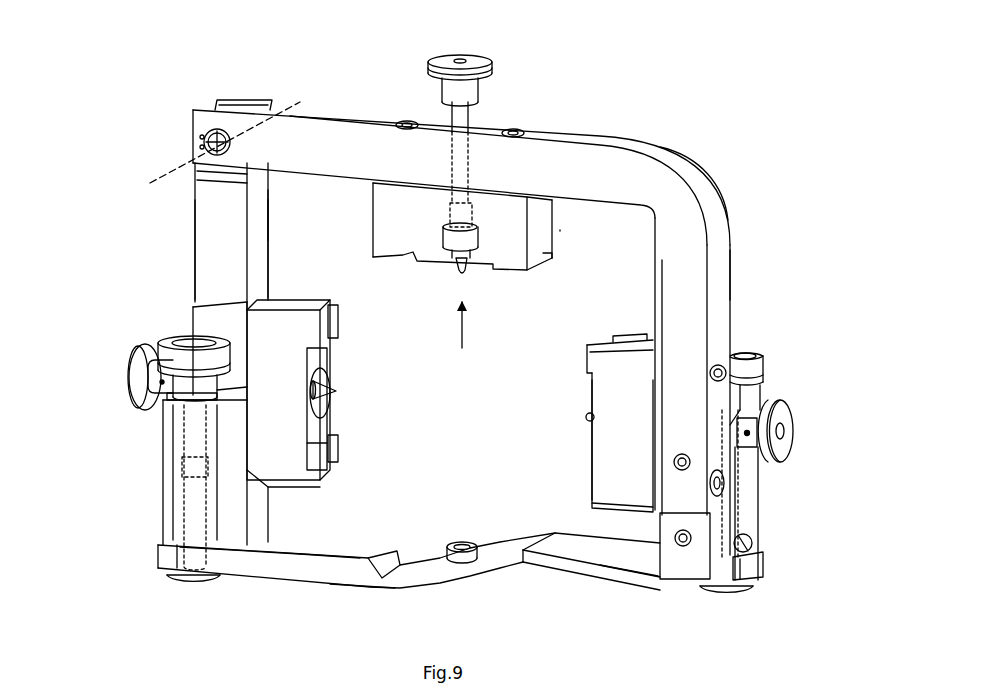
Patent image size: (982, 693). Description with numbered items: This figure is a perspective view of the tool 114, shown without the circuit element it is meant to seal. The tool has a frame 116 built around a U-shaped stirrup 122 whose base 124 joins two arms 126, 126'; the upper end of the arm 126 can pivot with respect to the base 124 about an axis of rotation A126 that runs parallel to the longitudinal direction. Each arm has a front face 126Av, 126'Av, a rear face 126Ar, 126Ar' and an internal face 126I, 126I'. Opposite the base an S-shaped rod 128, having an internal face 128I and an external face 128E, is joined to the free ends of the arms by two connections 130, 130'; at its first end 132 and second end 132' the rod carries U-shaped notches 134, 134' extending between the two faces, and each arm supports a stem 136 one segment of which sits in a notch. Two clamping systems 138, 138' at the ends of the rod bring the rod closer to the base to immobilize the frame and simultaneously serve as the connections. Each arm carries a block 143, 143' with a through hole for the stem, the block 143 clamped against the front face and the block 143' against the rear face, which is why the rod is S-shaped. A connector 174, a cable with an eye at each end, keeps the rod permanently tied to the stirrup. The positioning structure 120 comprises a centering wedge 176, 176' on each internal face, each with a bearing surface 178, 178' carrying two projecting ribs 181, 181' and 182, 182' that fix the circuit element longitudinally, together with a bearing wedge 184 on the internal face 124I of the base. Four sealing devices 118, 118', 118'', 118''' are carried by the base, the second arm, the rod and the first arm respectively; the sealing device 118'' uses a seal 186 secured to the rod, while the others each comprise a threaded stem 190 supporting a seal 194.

The tool 114 is at (640, 112).
The frame 116 is at (702, 164).
The sealing device 118 is at (448, 290).
The sealing device 118' is at (798, 404).
The sealing device 118'' is at (453, 511).
The sealing device 118''' is at (93, 375).
The positioning structure 120 is at (544, 403).
The U-shaped stirrup 122 is at (305, 102).
The base 124 is at (320, 138).
The internal face 124I is at (297, 183).
The arm 126 is at (218, 352).
The front face 126Av is at (222, 288).
The rear face 126Ar is at (310, 249).
The internal face 126I is at (292, 215).
The arm 126' is at (684, 377).
The rear face 126Ar' is at (777, 255).
The internal face 126I' is at (620, 364).
The front face 126'Av is at (601, 240).
The rod 128 is at (305, 574).
The internal face 128I is at (348, 553).
The external face 128E is at (358, 591).
The connection 130 is at (389, 583).
The connection 130' is at (748, 624).
The first end 132 is at (240, 591).
The second end 132' is at (626, 596).
The U-shaped notch 134 is at (130, 542).
The U-shaped notch 134' is at (779, 569).
The stem 136 is at (176, 553).
The clamping system 138 is at (161, 346).
The clamping system 138' is at (780, 366).
The block 143 is at (154, 423).
The block 143' is at (775, 513).
The connector 174 is at (765, 544).
The centering wedge 176 is at (293, 374).
The centering wedge 176' is at (585, 442).
The bearing surface 178 is at (350, 389).
The bearing surface 178' is at (558, 422).
The rib 181 is at (310, 489).
The rib 181' is at (590, 345).
The rib 182 is at (363, 396).
The rib 182' is at (603, 322).
The bearing wedge 184 is at (545, 232).
The seal 186 is at (463, 547).
The threaded stem 190 is at (468, 120).
The seal 194 is at (465, 265).
The axis of rotation A126 is at (200, 145).